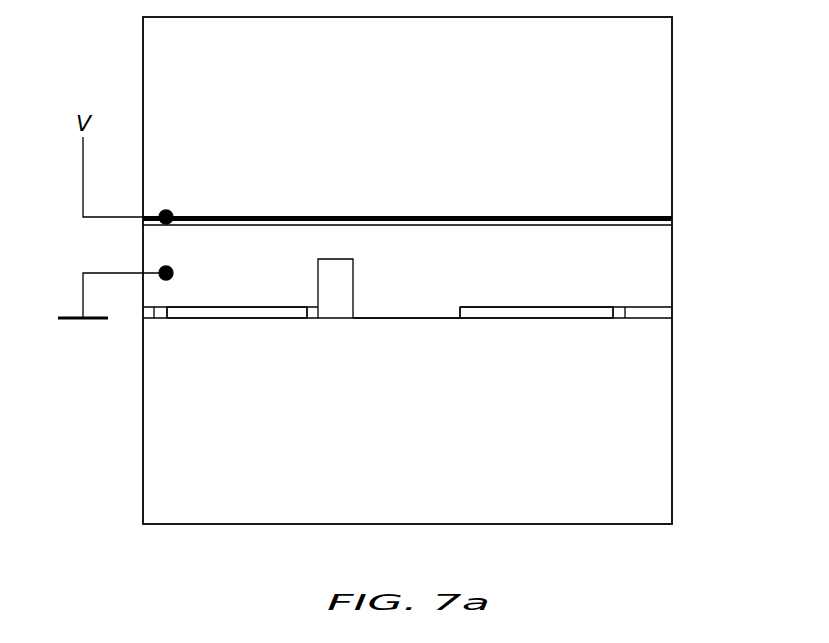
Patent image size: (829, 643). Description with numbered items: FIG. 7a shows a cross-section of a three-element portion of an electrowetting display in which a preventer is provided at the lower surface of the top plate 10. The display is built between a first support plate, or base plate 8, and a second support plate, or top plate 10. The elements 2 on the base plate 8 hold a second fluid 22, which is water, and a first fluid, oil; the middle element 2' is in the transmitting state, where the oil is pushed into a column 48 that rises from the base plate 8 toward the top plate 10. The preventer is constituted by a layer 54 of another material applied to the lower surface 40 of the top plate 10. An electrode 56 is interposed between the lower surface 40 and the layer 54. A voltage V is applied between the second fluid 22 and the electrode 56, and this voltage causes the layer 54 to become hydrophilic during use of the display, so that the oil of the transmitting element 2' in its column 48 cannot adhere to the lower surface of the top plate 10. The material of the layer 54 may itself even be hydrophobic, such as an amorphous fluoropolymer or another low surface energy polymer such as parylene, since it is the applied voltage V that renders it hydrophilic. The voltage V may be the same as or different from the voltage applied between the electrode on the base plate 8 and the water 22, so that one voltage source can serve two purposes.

The top plate 10 is at (661, 116).
The base plate 8 is at (661, 421).
The electrode 56 is at (672, 219).
The lower surface 40 is at (510, 215).
The layer 54 is at (590, 225).
The second fluid 22 is at (662, 268).
The column 48 is at (342, 287).
The element 2 is at (390, 331).
The transmitting element 2' is at (406, 331).